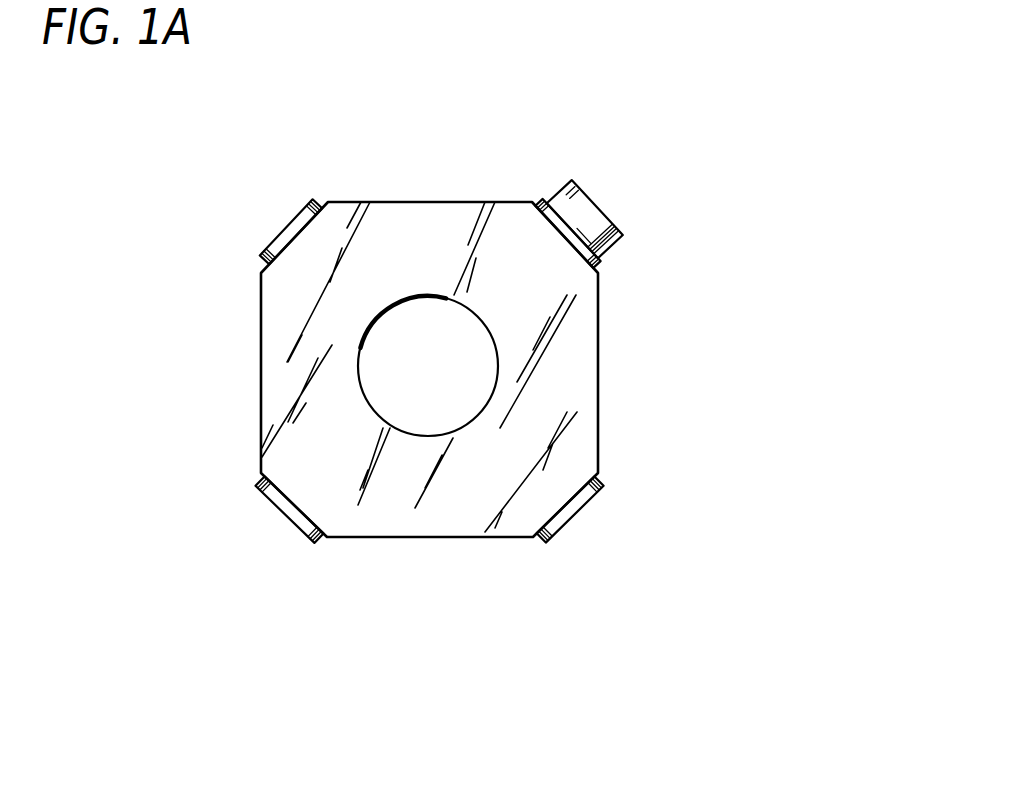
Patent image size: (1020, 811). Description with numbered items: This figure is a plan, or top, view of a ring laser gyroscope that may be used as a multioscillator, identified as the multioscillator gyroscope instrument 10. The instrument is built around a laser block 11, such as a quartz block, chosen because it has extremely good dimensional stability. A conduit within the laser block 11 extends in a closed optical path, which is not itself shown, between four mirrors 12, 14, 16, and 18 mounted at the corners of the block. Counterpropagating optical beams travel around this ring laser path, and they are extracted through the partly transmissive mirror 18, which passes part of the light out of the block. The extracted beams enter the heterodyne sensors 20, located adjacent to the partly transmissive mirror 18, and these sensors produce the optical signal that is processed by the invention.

The multioscillator gyroscope instrument 10 is at (640, 71).
The laser block 11 is at (271, 391).
The mirror 12 is at (586, 508).
The mirror 14 is at (285, 513).
The mirror 16 is at (284, 226).
The partly transmissive mirror 18 is at (600, 261).
The heterodyne sensors 20 is at (602, 206).